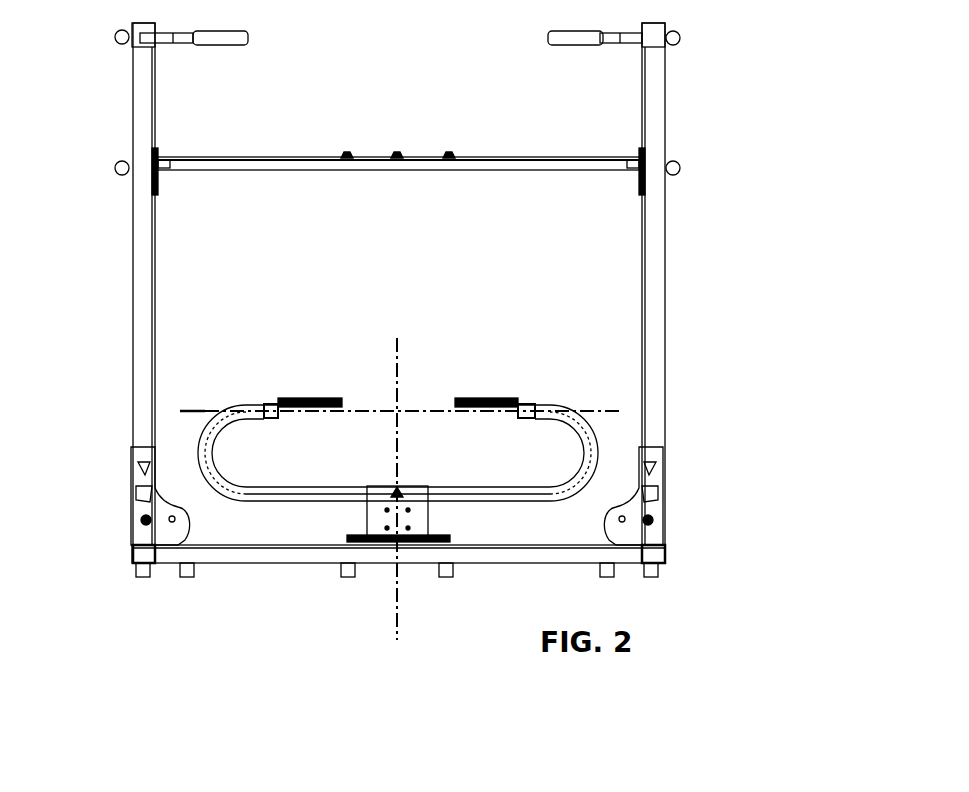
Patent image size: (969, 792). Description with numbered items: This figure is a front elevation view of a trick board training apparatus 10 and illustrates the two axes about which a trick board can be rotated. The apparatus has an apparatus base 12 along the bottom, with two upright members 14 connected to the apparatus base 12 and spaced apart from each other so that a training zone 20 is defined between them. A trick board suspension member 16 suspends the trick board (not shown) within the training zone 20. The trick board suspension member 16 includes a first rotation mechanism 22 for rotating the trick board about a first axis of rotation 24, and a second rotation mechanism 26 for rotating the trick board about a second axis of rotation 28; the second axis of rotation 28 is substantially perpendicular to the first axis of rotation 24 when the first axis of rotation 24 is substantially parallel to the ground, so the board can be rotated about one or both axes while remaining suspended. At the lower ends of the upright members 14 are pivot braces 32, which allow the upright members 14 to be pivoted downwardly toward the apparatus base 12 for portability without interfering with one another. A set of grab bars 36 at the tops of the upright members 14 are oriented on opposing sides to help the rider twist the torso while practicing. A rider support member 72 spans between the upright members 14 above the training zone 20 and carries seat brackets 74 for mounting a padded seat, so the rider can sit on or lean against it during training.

The trick board training apparatus 10 is at (702, 80).
The apparatus base 12 is at (258, 553).
The upright members 14 is at (143, 219).
The trick board suspension member 16 is at (585, 452).
The training zone 20 is at (505, 260).
The first rotation mechanism 22 is at (483, 398).
The first axis of rotation 24 is at (190, 411).
The second rotation mechanism 26 is at (427, 512).
The second axis of rotation 28 is at (397, 365).
The pivot brace 32 is at (135, 527).
The grab bars 36 is at (248, 40).
The rider support member 72 is at (540, 156).
The seat brackets 74 is at (355, 150).